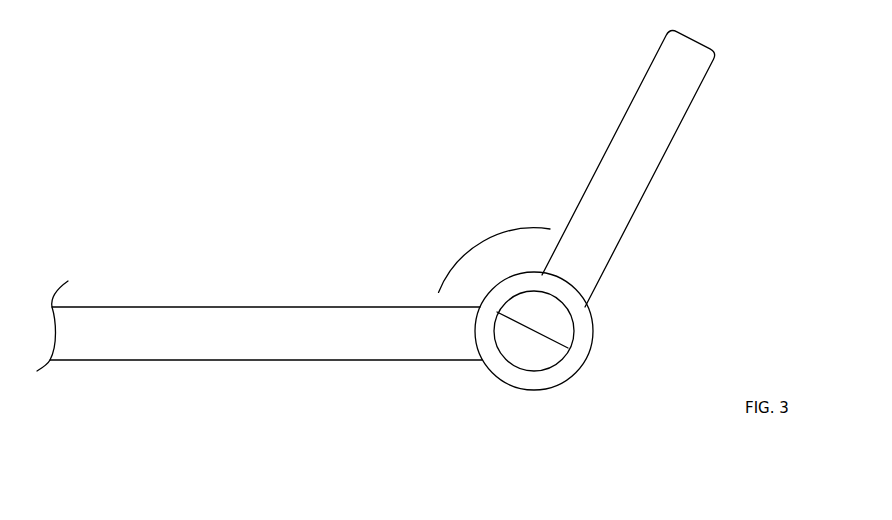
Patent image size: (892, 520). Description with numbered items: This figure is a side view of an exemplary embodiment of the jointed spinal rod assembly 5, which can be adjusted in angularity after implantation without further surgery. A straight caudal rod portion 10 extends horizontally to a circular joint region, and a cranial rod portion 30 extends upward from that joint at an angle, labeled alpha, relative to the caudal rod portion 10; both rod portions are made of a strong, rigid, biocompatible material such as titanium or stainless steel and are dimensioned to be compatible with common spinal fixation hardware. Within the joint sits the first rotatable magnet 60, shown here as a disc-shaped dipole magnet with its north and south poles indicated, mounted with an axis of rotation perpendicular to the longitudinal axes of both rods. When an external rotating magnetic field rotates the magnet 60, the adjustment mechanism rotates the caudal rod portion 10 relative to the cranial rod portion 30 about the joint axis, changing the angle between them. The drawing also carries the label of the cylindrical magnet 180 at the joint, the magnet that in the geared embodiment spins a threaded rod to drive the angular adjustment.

The jointed spinal rod assembly 5 is at (330, 101).
The caudal rod portion 10 is at (245, 361).
The cranial rod portion 30 is at (662, 163).
The first rotatable magnet 60 is at (547, 355).
The cylindrical magnet 180 is at (547, 355).